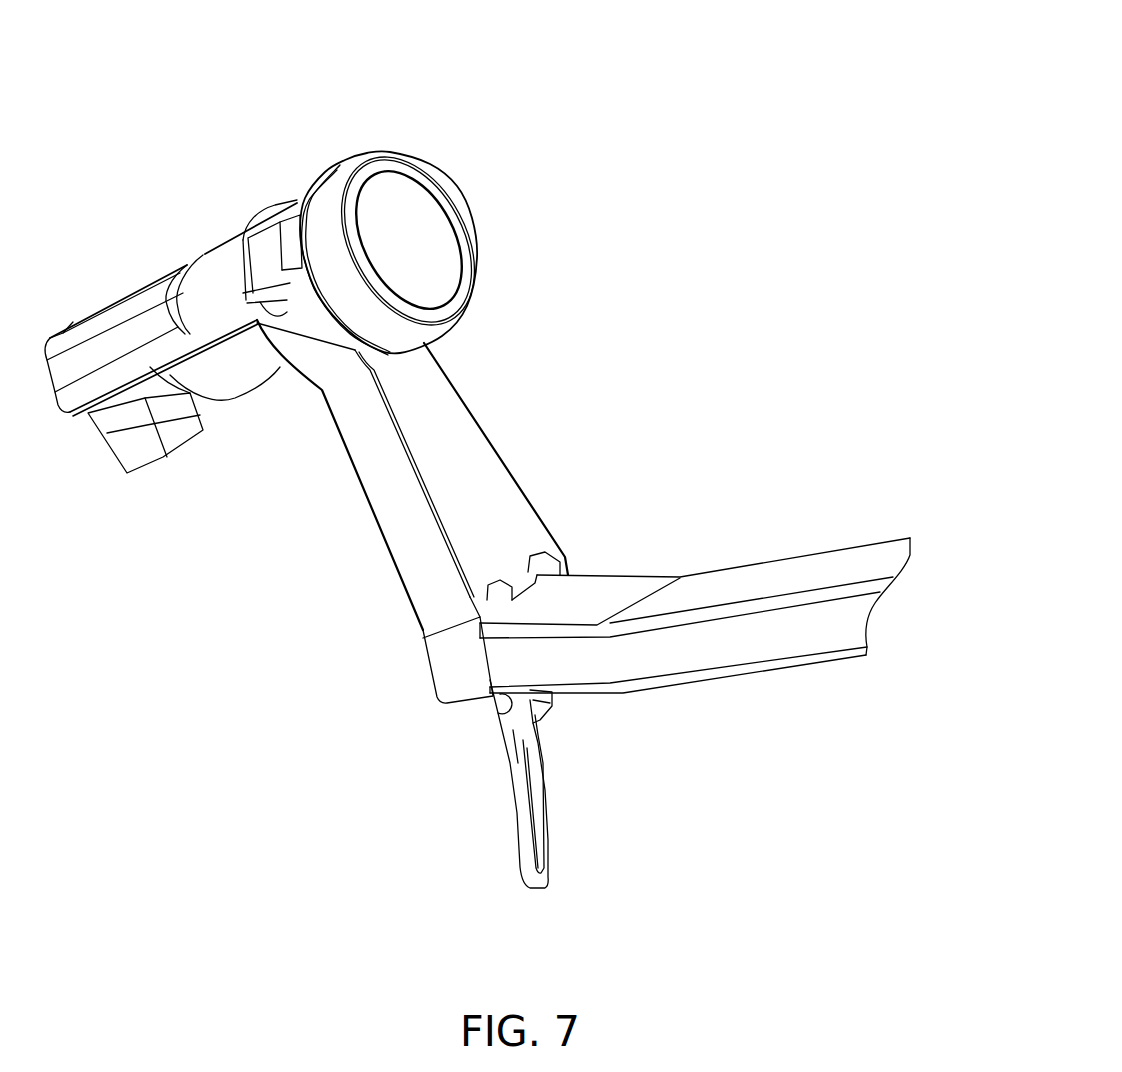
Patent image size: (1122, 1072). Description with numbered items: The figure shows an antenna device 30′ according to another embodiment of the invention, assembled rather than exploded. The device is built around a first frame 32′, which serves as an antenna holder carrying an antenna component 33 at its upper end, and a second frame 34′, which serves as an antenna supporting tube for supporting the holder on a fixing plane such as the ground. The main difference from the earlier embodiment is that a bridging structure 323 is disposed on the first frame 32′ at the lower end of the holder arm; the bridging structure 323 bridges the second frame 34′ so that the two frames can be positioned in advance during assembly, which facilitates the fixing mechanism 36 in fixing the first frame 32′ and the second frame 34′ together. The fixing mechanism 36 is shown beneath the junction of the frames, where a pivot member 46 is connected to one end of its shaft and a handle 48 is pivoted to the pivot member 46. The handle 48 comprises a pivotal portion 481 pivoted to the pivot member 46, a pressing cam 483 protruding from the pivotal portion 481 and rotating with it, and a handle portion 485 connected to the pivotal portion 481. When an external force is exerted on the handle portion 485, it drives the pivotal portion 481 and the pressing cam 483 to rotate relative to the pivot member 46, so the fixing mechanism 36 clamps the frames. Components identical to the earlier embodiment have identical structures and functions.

The antenna device 30′ is at (719, 84).
The antenna component 33 is at (222, 273).
The first frame 32′ is at (468, 435).
The second frame 34′ is at (773, 578).
The bridging structure 323 is at (445, 672).
The pivot member 46 is at (502, 713).
The fixing mechanism 36 is at (480, 804).
The handle 48 is at (658, 758).
The pressing cam 483 is at (523, 730).
The pivotal portion 481 is at (540, 757).
The handle portion 485 is at (527, 807).